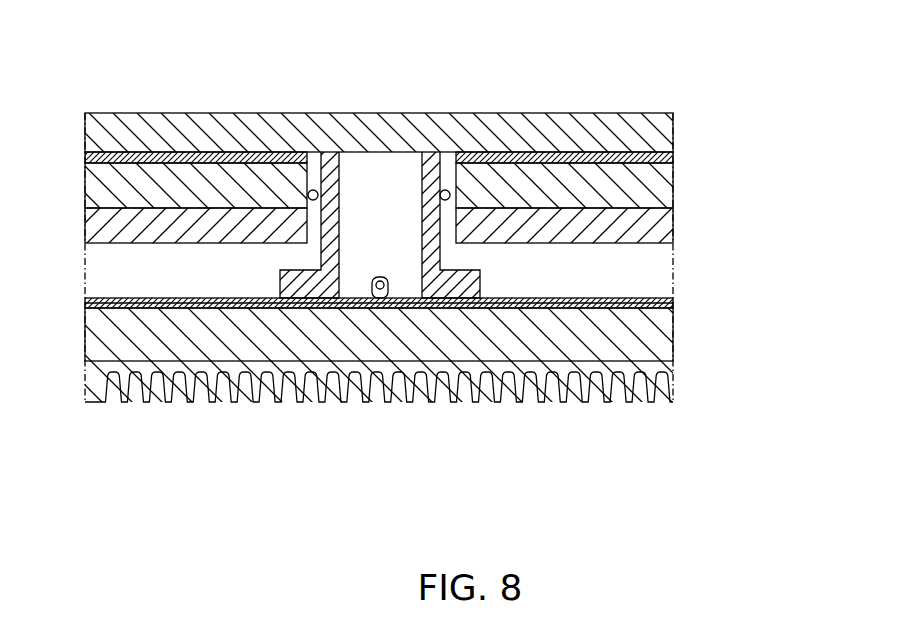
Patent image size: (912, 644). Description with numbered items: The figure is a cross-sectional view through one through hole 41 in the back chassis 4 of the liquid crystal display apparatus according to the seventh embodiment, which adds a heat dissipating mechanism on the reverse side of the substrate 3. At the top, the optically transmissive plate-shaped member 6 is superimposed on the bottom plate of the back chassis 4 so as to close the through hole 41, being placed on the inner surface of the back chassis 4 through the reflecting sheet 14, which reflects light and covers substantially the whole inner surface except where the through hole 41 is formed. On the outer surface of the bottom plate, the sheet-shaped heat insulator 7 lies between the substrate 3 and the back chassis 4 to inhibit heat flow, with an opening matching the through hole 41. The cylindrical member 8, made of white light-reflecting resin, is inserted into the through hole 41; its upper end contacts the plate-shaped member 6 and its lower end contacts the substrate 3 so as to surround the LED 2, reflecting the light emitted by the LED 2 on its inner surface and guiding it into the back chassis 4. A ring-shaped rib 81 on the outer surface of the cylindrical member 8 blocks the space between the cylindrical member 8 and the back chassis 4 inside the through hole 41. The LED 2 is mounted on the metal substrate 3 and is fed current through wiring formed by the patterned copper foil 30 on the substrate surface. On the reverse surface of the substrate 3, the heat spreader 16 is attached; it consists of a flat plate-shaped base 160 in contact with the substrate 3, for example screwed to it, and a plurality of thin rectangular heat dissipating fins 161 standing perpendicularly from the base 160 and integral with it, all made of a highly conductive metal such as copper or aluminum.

The plate-shaped member 6 is at (265, 113).
The ring-shaped rib 81 is at (310, 189).
The through hole 41 is at (441, 189).
The reflecting sheet 14 is at (673, 157).
The back chassis 4 is at (673, 190).
The heat insulator 7 is at (650, 242).
The cylindrical member 8 is at (480, 272).
The patterned copper foil 30 is at (673, 303).
The LED 2 is at (402, 300).
The substrate 3 is at (353, 420).
The base 160 is at (88, 366).
The heat dissipating fins 161 is at (119, 426).
The heat spreader 16 is at (353, 447).